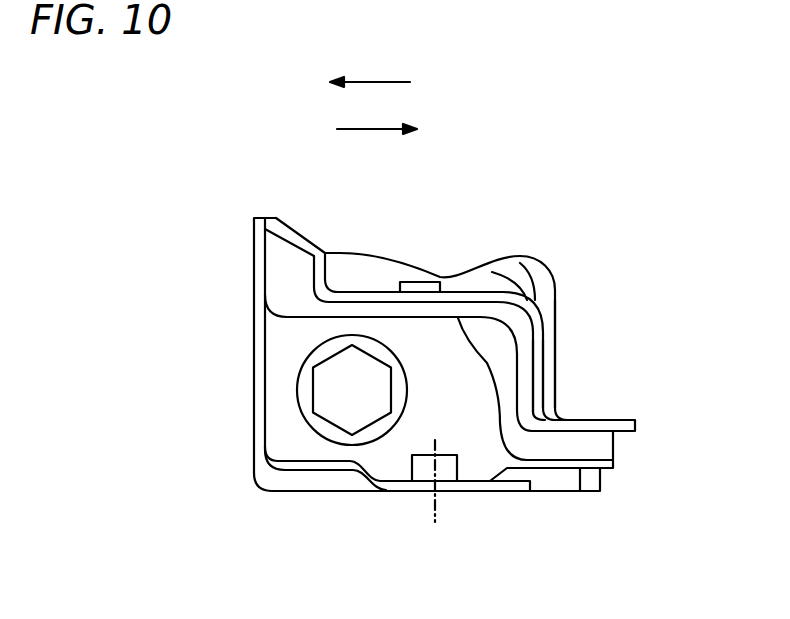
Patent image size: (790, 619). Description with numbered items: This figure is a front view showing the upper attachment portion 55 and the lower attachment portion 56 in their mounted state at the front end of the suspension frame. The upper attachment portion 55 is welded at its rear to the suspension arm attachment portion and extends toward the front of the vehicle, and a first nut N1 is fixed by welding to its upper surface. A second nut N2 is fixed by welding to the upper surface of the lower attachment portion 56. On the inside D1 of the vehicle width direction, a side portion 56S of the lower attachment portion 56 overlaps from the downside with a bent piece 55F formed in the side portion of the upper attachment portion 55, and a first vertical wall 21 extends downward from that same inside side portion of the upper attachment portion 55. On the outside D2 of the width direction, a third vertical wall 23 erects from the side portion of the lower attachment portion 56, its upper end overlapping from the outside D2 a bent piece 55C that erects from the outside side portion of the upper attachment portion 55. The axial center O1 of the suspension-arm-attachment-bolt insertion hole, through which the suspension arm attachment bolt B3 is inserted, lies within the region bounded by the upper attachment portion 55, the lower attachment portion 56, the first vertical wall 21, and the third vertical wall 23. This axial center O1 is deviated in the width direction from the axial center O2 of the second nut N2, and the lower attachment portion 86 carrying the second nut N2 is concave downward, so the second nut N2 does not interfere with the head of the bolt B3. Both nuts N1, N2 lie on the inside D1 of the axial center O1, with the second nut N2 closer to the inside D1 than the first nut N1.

The inside of the width direction of the vehicle D1 is at (397, 128).
The outside of the width direction of the vehicle D2 is at (392, 80).
The third vertical wall 23 is at (254, 268).
The bent piece 55C is at (292, 254).
The upper attachment portion 55 is at (367, 284).
The first nut N1 is at (422, 291).
The first vertical wall 21 is at (558, 350).
The bent piece 55F is at (614, 444).
The suspension arm attachment bolt B3 is at (323, 360).
The axial center of the suspension-arm-attachment-bolt insertion hole O1 is at (352, 391).
The lower attachment portion 56 is at (258, 498).
The second nut N2 is at (410, 482).
The axial center of the second nut O2 is at (437, 504).
The lower attachment portion 86 is at (475, 503).
The side portion of the lower attachment portion 56S is at (584, 492).